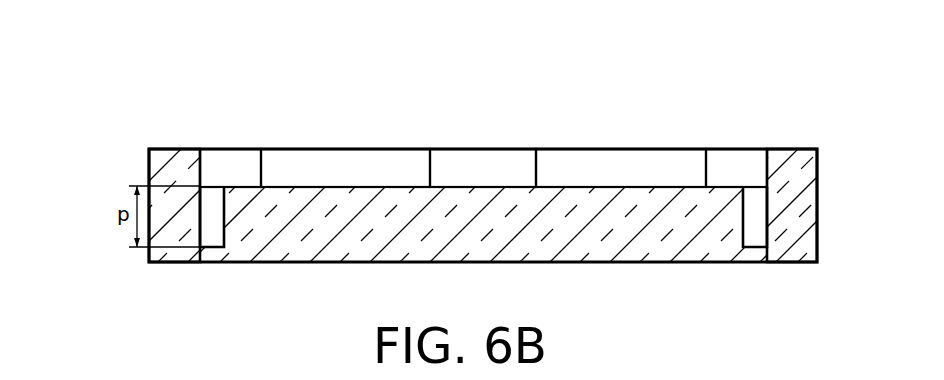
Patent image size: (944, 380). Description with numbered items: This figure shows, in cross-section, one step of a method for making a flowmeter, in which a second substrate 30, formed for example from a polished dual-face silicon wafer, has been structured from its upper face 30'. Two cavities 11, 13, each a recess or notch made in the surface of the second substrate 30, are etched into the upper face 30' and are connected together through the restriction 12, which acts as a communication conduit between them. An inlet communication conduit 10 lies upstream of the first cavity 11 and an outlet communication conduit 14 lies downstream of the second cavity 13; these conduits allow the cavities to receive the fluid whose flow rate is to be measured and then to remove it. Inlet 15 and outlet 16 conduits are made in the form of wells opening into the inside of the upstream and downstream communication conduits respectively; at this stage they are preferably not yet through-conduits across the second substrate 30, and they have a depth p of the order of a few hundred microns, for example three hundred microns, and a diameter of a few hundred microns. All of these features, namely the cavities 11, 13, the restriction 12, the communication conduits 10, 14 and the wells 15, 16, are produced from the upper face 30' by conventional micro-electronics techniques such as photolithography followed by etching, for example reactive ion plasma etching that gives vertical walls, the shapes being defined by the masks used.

The inlet communication conduit 10 is at (239, 166).
The cavity 11 is at (362, 167).
The restriction 12 is at (498, 162).
The cavity 13 is at (604, 162).
The outlet communication conduit 14 is at (727, 162).
The inlet conduit 15 is at (213, 238).
The outlet conduit 16 is at (750, 233).
The second substrate 30 is at (185, 182).
The upper face 30' is at (787, 188).